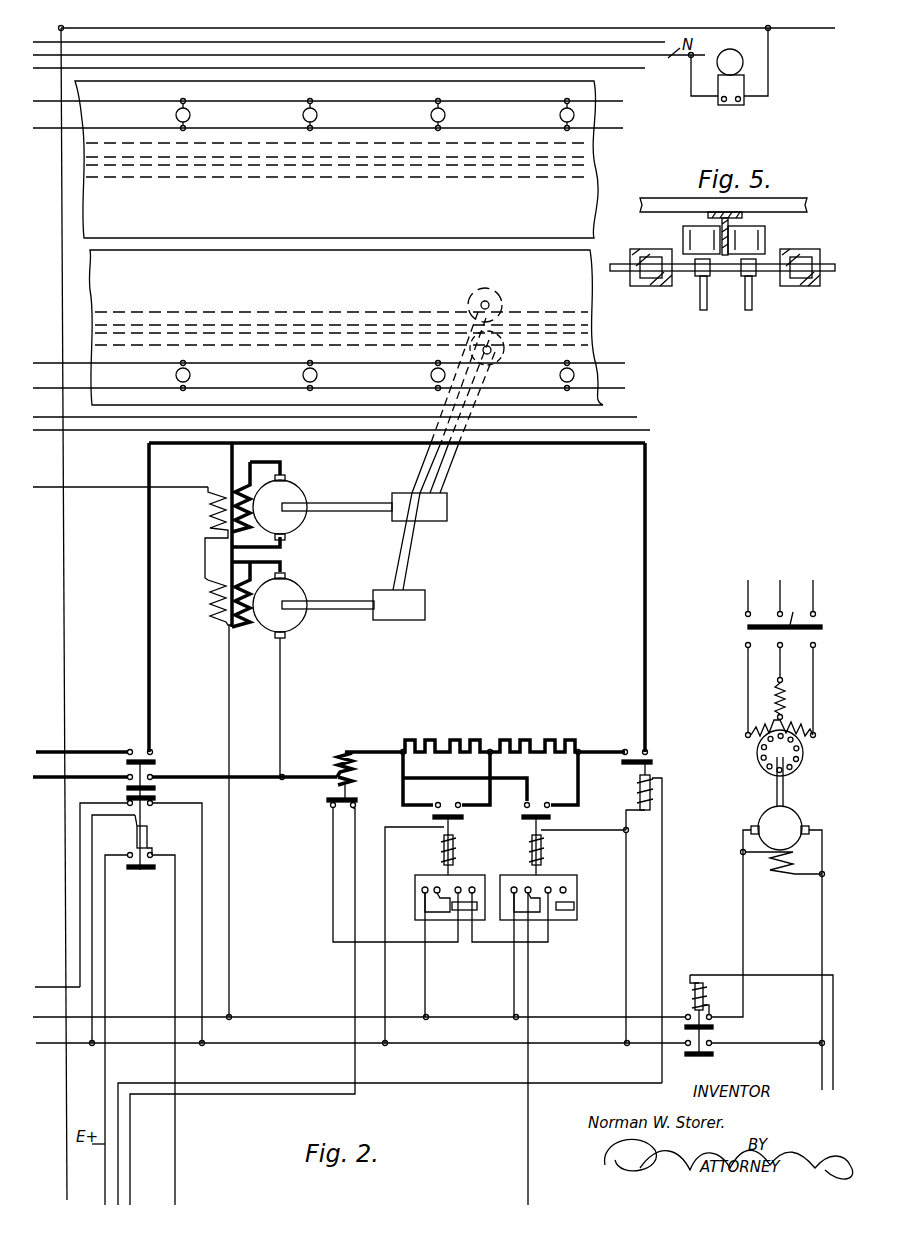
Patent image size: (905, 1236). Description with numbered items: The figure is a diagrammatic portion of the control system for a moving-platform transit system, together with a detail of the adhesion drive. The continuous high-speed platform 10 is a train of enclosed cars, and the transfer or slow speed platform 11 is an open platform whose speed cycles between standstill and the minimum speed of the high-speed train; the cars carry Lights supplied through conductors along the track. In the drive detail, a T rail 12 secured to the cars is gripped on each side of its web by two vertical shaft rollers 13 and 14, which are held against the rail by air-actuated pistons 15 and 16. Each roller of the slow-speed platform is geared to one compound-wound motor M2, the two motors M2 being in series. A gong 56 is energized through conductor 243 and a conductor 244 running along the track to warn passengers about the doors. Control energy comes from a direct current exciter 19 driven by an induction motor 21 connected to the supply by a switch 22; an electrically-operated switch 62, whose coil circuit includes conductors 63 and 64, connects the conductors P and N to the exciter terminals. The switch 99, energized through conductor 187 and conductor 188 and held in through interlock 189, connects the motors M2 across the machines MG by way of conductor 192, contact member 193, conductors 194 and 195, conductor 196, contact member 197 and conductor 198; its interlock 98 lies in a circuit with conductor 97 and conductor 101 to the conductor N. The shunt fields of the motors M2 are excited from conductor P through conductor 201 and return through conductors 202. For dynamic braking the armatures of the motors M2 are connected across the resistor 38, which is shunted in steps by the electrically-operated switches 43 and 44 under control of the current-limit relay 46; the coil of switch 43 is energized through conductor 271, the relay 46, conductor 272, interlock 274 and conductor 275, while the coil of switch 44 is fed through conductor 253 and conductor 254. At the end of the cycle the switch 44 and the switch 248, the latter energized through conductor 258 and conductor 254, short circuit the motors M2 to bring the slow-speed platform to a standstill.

In FIG. 2, the conductor 244 is at (242, 32).
In FIG. 2, the signal (gong) 56 is at (740, 56).
In FIG. 2, the continuous platform or train 10 is at (330, 159).
In FIG. 5, the continuous platform or train 10 is at (655, 206).
In FIG. 2, the transfer or slow speed platform 11 is at (335, 327).
In FIG. 2, the T rail 12 is at (350, 326).
In FIG. 5, the T rail 12 is at (738, 230).
In FIG. 2, the vertical shaft roller 13 is at (503, 300).
In FIG. 5, the vertical shaft roller 13 is at (683, 236).
In FIG. 2, the vertical shaft roller 14 is at (505, 352).
In FIG. 5, the vertical shaft roller 14 is at (765, 240).
In FIG. 5, the piston 15 is at (646, 287).
In FIG. 5, the piston 16 is at (800, 287).
In FIG. 2, the conductors 202 is at (86, 490).
In FIG. 2, the conductor 196 is at (150, 568).
In FIG. 2, the motors M2 is at (339, 550).
In FIG. 2, the conductor 195 is at (278, 697).
In FIG. 2, the conductor 198 is at (94, 744).
In FIG. 2, the contact member 197 is at (137, 748).
In FIG. 2, the conductor 192 is at (52, 781).
In FIG. 2, the contact member 193 is at (156, 790).
In FIG. 2, the conductor 194 is at (237, 777).
In FIG. 2, the interlock 98 is at (125, 800).
In FIG. 2, the switch 99 is at (142, 924).
In FIG. 2, the conductor 188 is at (120, 822).
In FIG. 2, the interlock 189 is at (140, 870).
In FIG. 2, the conductor 101 is at (202, 905).
In FIG. 2, the conductor 97 is at (60, 987).
In FIG. 2, the conductor 201 is at (229, 897).
In FIG. 2, the current-limit relay 46 is at (355, 777).
In FIG. 2, the conductor 272 is at (294, 995).
In FIG. 2, the resistor 38 is at (478, 736).
In FIG. 2, the electrically-operated switch 43 is at (452, 867).
In FIG. 2, the electrically-operated switch 44 is at (539, 867).
In FIG. 2, the conductor 275 is at (402, 846).
In FIG. 2, the interlock 274 is at (421, 915).
In FIG. 2, the conductor 254 is at (626, 928).
In FIG. 2, the conductor 253 is at (528, 1160).
In FIG. 2, the switch 248 is at (637, 790).
In FIG. 2, the switch 22 is at (745, 634).
In FIG. 2, the induction motor 21 is at (758, 757).
In FIG. 2, the direct current exciter 19 is at (766, 822).
In FIG. 2, the conductor 63 is at (806, 975).
In FIG. 2, the conductor 64 is at (833, 1086).
In FIG. 2, the electrically-operated switch 62 is at (694, 992).
In FIG. 2, the conductor P is at (580, 1017).
In FIG. 2, the conductor N is at (580, 1043).
In FIG. 2, the conductor 258 is at (258, 1083).
In FIG. 2, the conductor 271 is at (130, 1172).
In FIG. 2, the conductor 187 is at (175, 1170).
In FIG. 2, the conductor 243 is at (67, 1180).
In FIG. 2, the lights Lights is at (302, 115).